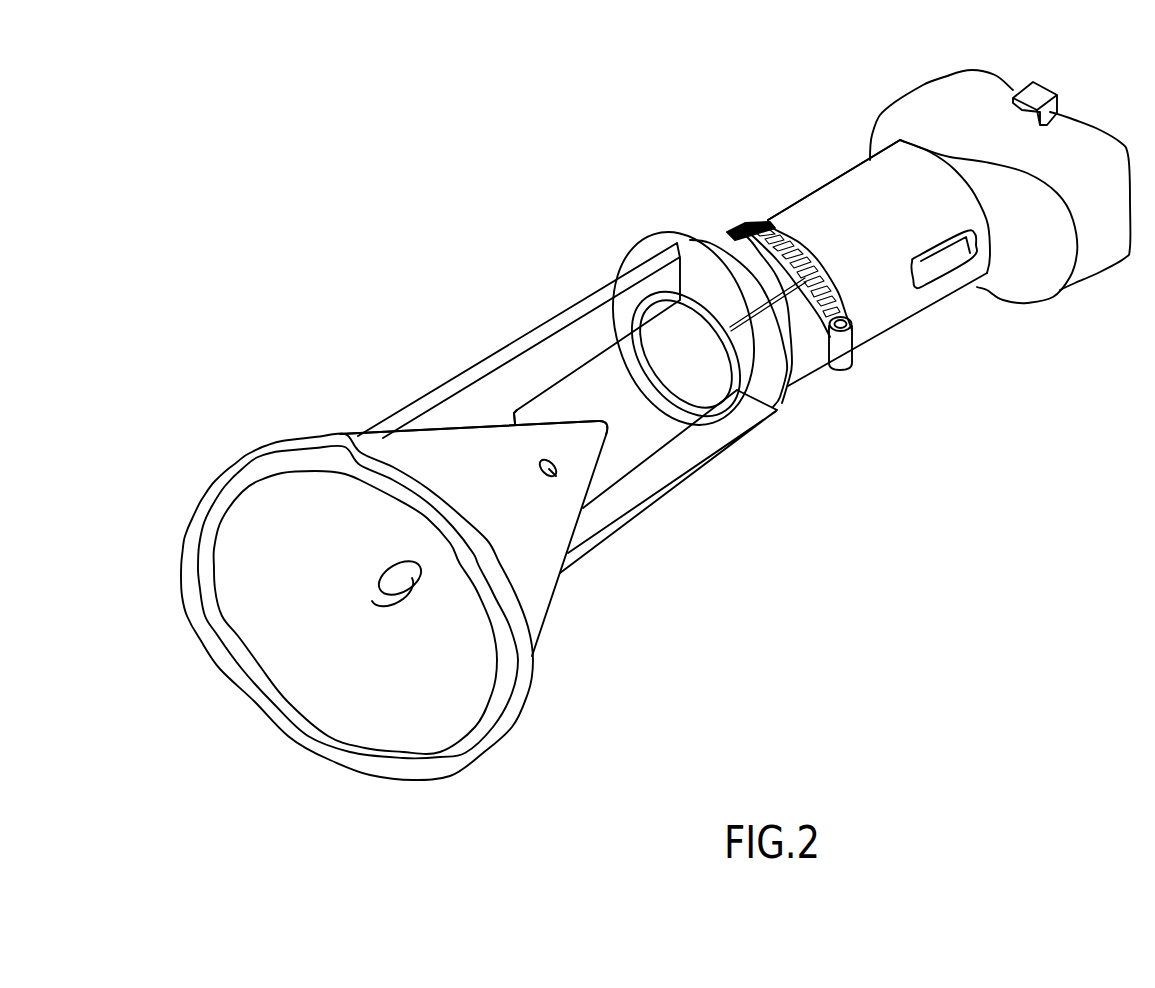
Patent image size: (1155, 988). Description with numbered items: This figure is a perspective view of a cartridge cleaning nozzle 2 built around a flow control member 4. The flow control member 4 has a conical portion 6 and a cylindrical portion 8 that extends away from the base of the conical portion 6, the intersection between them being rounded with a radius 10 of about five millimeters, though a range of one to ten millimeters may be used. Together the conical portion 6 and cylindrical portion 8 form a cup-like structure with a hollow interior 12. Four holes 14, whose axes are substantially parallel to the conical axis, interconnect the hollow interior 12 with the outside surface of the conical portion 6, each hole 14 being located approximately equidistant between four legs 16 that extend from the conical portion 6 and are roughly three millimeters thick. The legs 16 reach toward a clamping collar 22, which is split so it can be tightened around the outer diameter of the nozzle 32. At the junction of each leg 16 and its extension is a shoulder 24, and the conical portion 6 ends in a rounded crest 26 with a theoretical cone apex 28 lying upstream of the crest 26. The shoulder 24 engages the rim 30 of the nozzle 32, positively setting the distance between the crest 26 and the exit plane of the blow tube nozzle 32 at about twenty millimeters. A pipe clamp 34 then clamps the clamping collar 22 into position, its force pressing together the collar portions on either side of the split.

The cartridge cleaning nozzle 2 is at (713, 147).
The flow control member 4 is at (386, 347).
The conical portion 6 is at (432, 453).
The cylindrical portion 8 is at (442, 762).
The radius 10 is at (512, 592).
The hollow interior 12 is at (393, 620).
The holes 14 is at (390, 563).
The legs 16 is at (590, 355).
The clamping collar 22 is at (797, 232).
The shoulder 24 is at (677, 297).
The rounded crest 26 is at (607, 422).
The theoretical cone apex 28 is at (548, 313).
The rim 30 is at (717, 323).
The nozzle 32 is at (888, 320).
The pipe clamp 34 is at (853, 353).